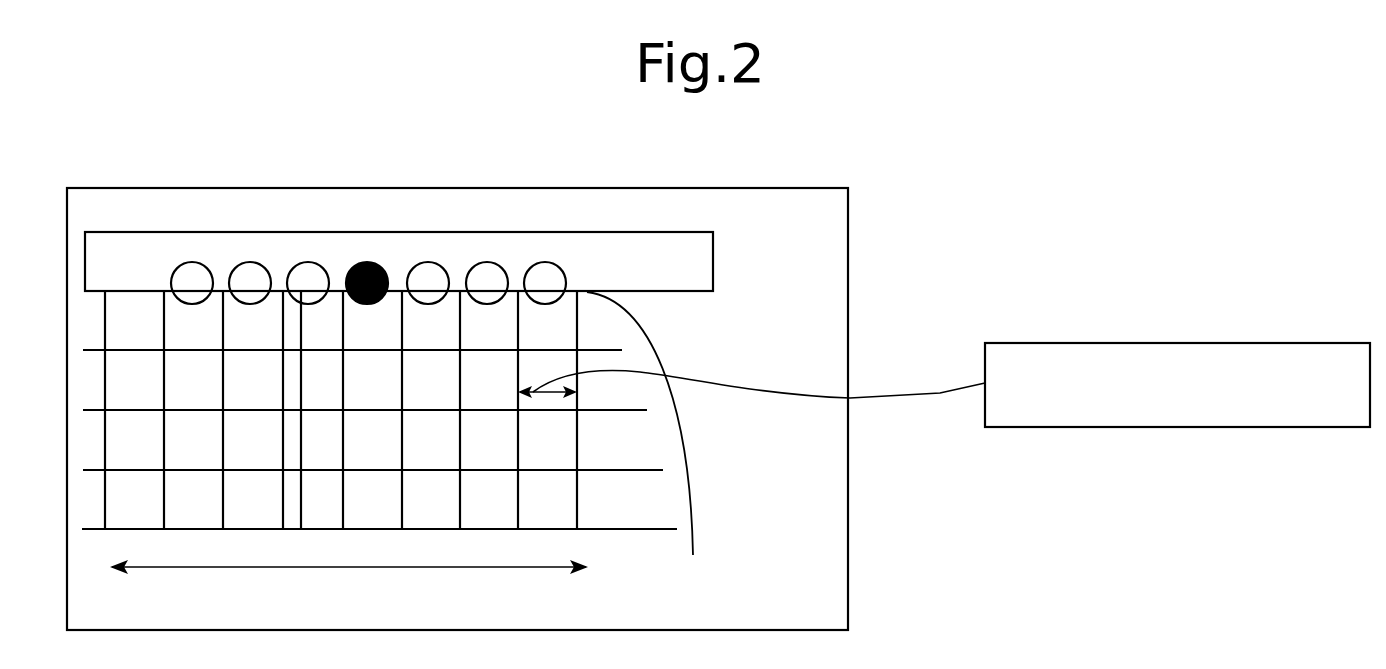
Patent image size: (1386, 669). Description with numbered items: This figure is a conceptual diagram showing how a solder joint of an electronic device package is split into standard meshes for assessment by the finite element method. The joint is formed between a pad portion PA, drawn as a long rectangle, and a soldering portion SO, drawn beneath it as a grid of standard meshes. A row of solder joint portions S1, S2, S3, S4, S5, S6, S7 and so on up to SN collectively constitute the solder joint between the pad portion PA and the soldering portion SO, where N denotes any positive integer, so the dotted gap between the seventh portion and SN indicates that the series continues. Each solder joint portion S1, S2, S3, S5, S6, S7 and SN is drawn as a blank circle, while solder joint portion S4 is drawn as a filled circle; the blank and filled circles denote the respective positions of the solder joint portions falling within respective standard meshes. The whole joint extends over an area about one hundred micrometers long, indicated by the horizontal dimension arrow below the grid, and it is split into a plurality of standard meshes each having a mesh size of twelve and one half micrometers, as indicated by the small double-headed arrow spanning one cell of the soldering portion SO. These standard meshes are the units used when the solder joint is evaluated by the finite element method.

The solder joint portion S1 is at (192, 262).
The solder joint portion S2 is at (250, 262).
The solder joint portion S3 is at (308, 262).
The solder joint portion S4 is at (367, 262).
The solder joint portion S5 is at (428, 262).
The solder joint portion S6 is at (487, 262).
The solder joint portion S7 is at (545, 262).
The solder joint portion SN is at (645, 132).
The pad portion PA is at (735, 277).
The soldering portion SO is at (711, 505).